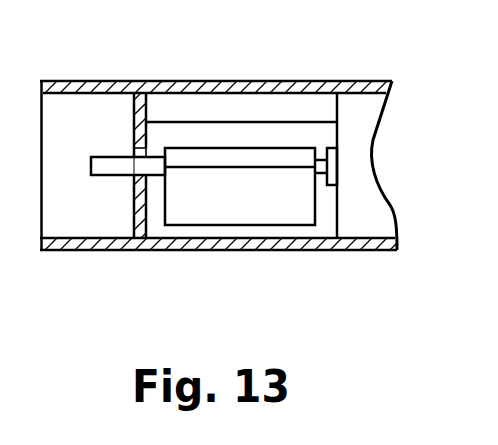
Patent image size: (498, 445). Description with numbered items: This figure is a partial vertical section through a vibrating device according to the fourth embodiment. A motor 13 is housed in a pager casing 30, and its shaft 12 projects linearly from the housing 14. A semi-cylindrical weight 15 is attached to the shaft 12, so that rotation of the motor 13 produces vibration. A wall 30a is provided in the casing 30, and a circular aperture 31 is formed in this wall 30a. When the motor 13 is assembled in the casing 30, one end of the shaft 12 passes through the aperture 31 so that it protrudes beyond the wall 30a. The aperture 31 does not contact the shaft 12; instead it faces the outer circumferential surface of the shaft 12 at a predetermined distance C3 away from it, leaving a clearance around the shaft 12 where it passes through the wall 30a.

The pager casing 30 is at (175, 82).
The wall 30a is at (133, 117).
The circular aperture 31 is at (132, 180).
The predetermined distance C3 is at (160, 142).
The shaft 12 is at (107, 157).
The semi-cylindrical weight 15 is at (243, 210).
The motor 13 is at (363, 105).
The housing 14 is at (359, 251).